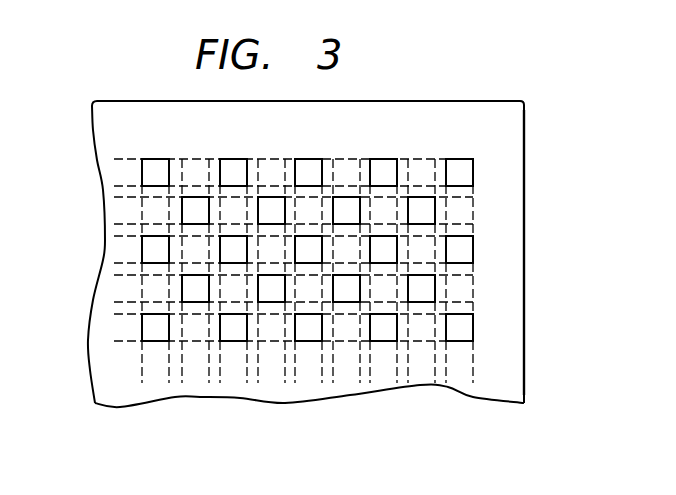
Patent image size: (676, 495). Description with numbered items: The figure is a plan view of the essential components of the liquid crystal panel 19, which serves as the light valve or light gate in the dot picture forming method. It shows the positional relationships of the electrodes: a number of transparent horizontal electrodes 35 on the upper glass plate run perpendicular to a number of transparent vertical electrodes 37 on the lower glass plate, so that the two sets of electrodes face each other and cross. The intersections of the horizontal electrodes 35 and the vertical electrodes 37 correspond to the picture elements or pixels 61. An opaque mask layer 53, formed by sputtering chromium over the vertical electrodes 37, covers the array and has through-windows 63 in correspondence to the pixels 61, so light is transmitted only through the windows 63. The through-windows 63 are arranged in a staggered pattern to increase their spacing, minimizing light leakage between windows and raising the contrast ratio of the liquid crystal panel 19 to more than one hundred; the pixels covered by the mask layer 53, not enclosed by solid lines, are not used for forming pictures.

The liquid crystal panel 19 is at (524, 119).
The mask layer 53 is at (512, 183).
The transparent horizontal electrodes 35 is at (128, 173).
The transparent vertical electrodes 37 is at (158, 363).
The pixels 61 is at (460, 323).
The through-windows 63 is at (476, 332).